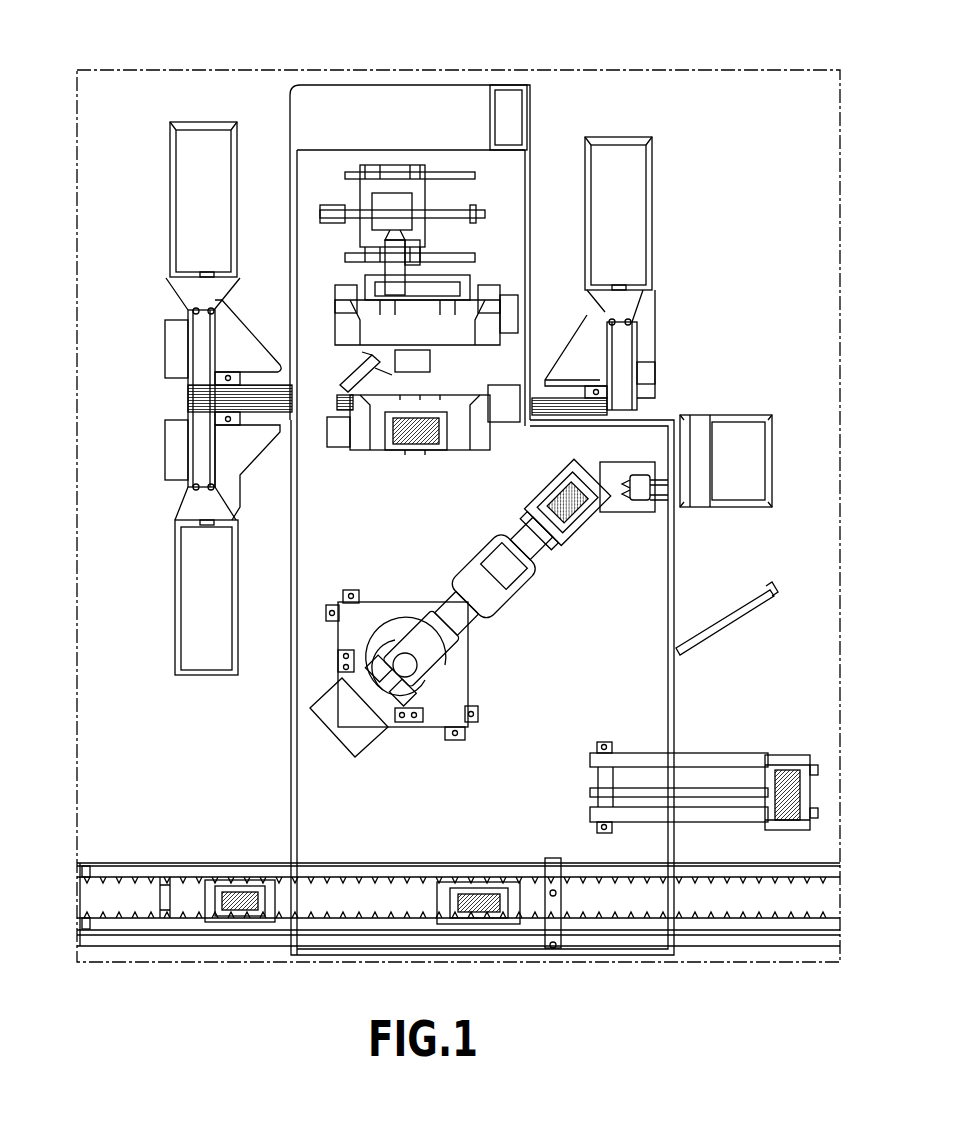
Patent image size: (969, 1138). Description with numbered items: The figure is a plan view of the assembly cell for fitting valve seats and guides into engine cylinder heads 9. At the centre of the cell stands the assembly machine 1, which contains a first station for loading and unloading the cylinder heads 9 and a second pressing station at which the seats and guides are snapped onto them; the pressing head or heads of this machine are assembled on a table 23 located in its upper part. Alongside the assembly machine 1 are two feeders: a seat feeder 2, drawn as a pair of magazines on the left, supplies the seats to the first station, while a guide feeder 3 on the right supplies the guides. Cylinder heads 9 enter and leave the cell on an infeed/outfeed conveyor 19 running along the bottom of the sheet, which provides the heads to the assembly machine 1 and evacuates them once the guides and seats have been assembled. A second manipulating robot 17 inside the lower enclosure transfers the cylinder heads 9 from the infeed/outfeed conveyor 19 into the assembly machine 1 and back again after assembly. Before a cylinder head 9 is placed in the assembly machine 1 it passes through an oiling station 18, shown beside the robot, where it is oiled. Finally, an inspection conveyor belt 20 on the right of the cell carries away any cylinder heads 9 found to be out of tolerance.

The assembly machine 1 is at (490, 205).
The seat feeder 2 is at (205, 588).
The guide feeder 3 is at (620, 247).
The engine cylinder head 9 is at (408, 456).
The second manipulating robot 17 is at (478, 593).
The oiling station 18 is at (638, 487).
The infeed/outfeed conveyor 19 is at (137, 897).
The inspection conveyor belt 20 is at (725, 773).
The table 23 is at (407, 185).